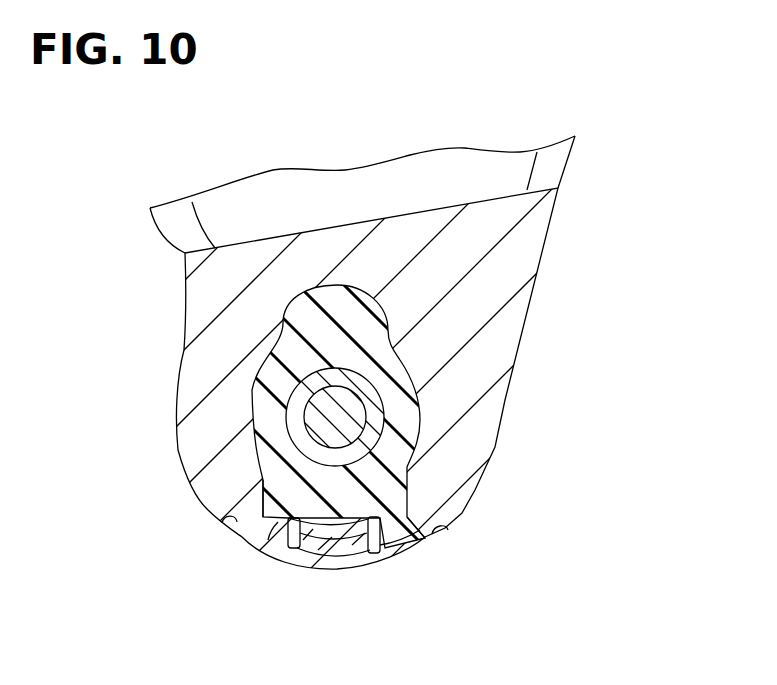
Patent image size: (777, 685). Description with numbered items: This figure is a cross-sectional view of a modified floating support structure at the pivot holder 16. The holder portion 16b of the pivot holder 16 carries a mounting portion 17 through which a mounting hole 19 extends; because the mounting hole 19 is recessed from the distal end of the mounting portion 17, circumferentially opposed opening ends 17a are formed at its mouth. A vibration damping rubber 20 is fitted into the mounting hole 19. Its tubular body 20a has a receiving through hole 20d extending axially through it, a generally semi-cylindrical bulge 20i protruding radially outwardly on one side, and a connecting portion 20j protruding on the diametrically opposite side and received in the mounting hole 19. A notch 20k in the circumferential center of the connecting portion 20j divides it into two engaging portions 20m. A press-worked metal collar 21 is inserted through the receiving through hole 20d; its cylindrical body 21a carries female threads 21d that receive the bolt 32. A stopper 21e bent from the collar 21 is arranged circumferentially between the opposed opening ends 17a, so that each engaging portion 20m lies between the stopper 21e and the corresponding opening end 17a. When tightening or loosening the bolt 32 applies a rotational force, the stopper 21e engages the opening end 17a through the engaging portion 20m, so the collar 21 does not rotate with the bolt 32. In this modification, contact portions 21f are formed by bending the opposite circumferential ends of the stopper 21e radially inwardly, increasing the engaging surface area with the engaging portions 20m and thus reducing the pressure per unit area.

The pivot holder 16 is at (221, 186).
The holder portion 16b is at (438, 168).
The mounting portion 17 is at (532, 238).
The opening end 17a is at (227, 518).
The vibration damping rubber 20 is at (258, 373).
The bulge 20i is at (332, 300).
The tubular body 20a is at (393, 363).
The receiving through hole 20d is at (420, 398).
The connecting portion 20j is at (298, 490).
The engaging portion 20m is at (262, 515).
The notch 20k is at (298, 542).
The collar 21 is at (292, 443).
The female threads 21d is at (383, 420).
The stopper 21e is at (333, 547).
The contact portion 21f is at (285, 525).
The cylindrical body 21a is at (387, 523).
The bolt 32 is at (318, 405).
The mounting hole 19 is at (252, 418).